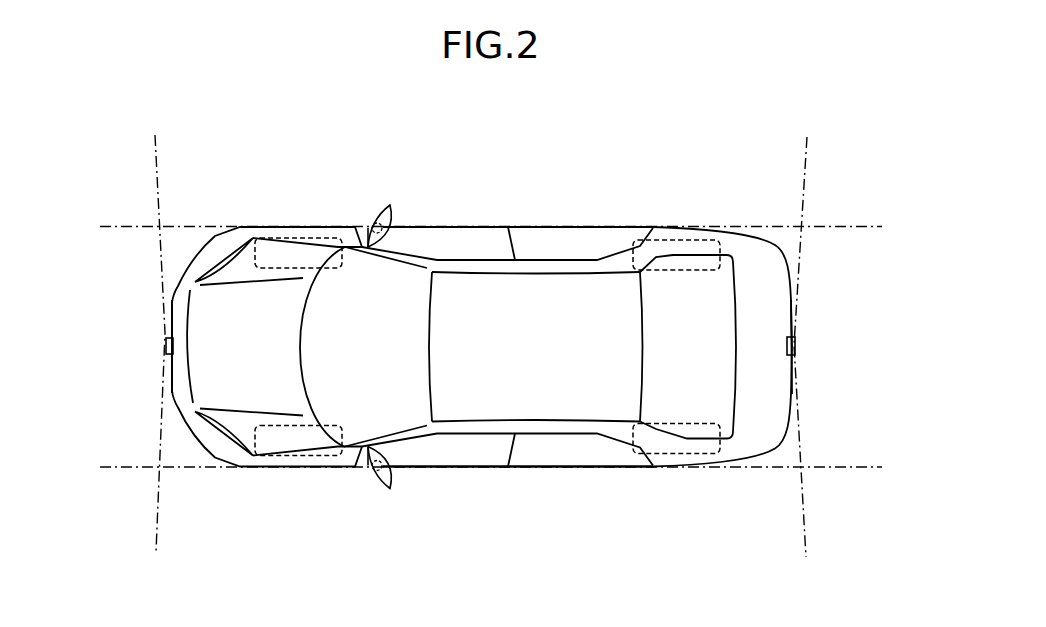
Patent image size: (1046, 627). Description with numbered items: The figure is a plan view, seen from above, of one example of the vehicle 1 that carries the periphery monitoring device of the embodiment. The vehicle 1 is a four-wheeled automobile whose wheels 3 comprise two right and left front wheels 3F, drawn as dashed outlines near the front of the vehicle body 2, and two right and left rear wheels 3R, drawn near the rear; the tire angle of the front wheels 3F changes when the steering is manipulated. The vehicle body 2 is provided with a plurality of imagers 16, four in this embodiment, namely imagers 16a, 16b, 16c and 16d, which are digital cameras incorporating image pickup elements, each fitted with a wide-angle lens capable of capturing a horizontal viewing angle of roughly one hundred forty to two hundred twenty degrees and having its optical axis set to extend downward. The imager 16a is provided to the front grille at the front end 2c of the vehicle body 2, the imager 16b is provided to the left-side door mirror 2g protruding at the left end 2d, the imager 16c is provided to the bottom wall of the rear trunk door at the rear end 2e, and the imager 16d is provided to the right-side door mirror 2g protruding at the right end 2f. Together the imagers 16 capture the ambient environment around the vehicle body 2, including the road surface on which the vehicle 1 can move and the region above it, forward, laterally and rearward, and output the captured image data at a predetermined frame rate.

The vehicle 1 is at (592, 145).
The vehicle body 2 is at (744, 225).
The front end 2c is at (165, 383).
The left end 2d is at (578, 470).
The rear end 2e is at (796, 367).
The right end 2f is at (587, 225).
The door mirror 2g is at (390, 206).
The wheels 3 is at (487, 346).
The front wheels 3F is at (295, 237).
The rear wheels 3R is at (675, 238).
The imagers 16 is at (487, 359).
The imager 16a is at (167, 343).
The imager 16b is at (373, 478).
The imager 16c is at (796, 345).
The imager 16d is at (372, 214).